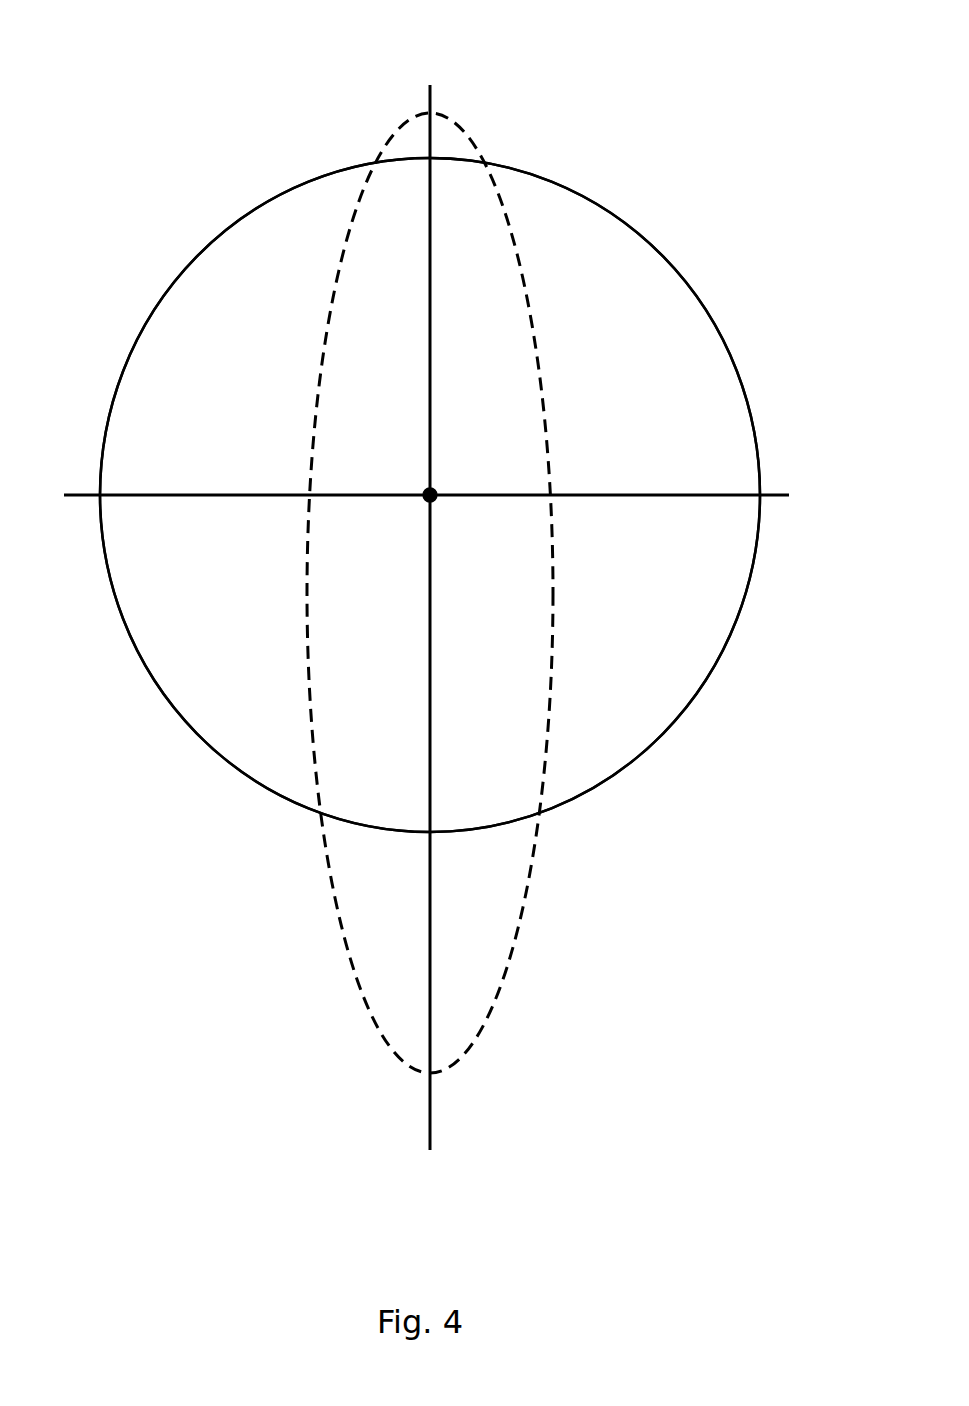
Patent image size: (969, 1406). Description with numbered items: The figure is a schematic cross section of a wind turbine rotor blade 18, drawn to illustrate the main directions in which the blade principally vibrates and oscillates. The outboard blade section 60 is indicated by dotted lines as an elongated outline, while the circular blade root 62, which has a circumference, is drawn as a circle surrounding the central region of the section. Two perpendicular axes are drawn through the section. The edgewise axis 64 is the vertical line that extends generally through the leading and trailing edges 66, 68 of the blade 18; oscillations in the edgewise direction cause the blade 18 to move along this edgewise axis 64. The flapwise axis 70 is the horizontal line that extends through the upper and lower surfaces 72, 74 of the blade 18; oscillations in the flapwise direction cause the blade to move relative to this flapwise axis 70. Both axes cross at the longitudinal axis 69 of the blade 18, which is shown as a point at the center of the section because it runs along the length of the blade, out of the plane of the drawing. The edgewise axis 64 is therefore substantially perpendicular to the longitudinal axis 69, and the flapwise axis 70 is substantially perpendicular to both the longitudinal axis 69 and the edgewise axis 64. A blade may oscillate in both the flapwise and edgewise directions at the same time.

The rotor blade 18 is at (147, 138).
The outboard blade section 60 is at (507, 205).
The circular blade root 62 is at (625, 220).
The edgewise axis 64 is at (430, 85).
The leading edge 66 is at (398, 1111).
The trailing edge 68 is at (400, 94).
The longitudinal axis 69 is at (432, 490).
The flapwise axis 70 is at (789, 495).
The upper surface 72 is at (276, 431).
The lower surface 74 is at (581, 438).